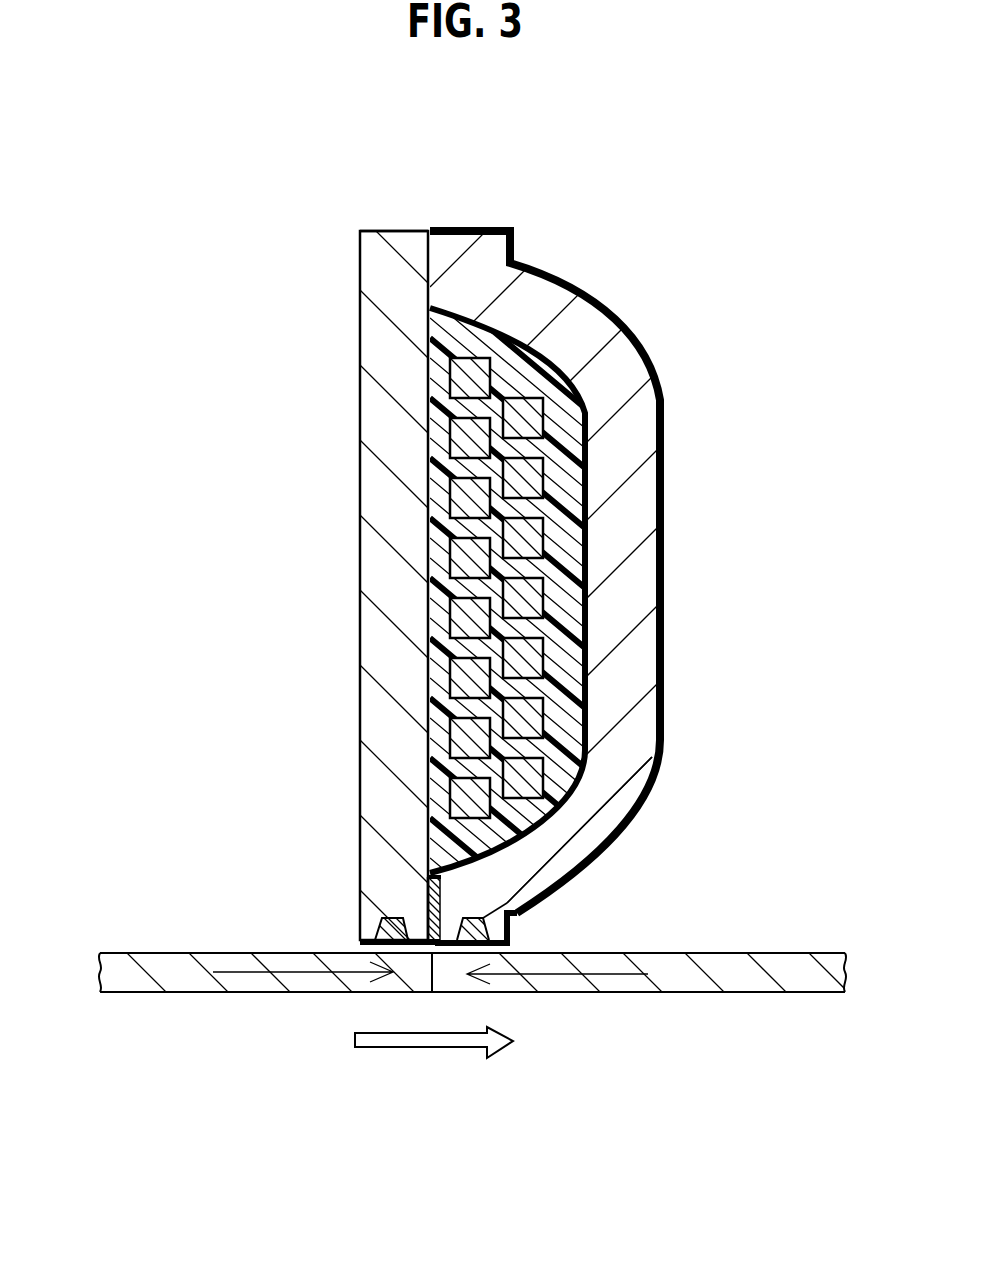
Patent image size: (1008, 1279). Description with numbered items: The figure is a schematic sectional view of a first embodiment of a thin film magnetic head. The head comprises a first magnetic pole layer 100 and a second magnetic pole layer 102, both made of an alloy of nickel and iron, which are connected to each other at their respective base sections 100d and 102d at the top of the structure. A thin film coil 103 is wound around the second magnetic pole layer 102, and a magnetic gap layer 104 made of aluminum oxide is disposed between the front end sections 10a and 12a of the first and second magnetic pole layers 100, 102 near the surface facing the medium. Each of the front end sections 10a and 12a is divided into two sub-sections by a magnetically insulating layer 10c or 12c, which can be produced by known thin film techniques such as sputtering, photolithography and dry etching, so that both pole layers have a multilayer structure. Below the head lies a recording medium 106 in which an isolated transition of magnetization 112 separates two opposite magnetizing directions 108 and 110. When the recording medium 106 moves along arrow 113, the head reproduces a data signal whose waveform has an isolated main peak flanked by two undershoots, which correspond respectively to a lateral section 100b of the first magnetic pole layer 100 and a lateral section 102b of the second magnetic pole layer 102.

The first magnetic pole layer 100 is at (358, 556).
The base section of first magnetic pole layer 100d is at (367, 293).
The lateral section of first magnetic pole layer 100b is at (360, 940).
The second magnetic pole layer 102 is at (638, 632).
The base section of second magnetic pole layer 102d is at (502, 254).
The lateral section of second magnetic pole layer 102b is at (517, 927).
The thin film coil 103 is at (545, 552).
The magnetic gap layer 104 is at (427, 880).
The front end section of first magnetic pole layer 10a is at (425, 884).
The magnetically insulating layer 10c is at (395, 917).
The front end section of second magnetic pole layer 12a is at (490, 890).
The magnetically insulating layer 12c is at (517, 905).
The recording medium 106 is at (777, 990).
The magnetizing direction 108 is at (283, 990).
The magnetizing direction 110 is at (577, 978).
The isolated transition of magnetization 112 is at (432, 993).
The arrow 113 is at (457, 1050).